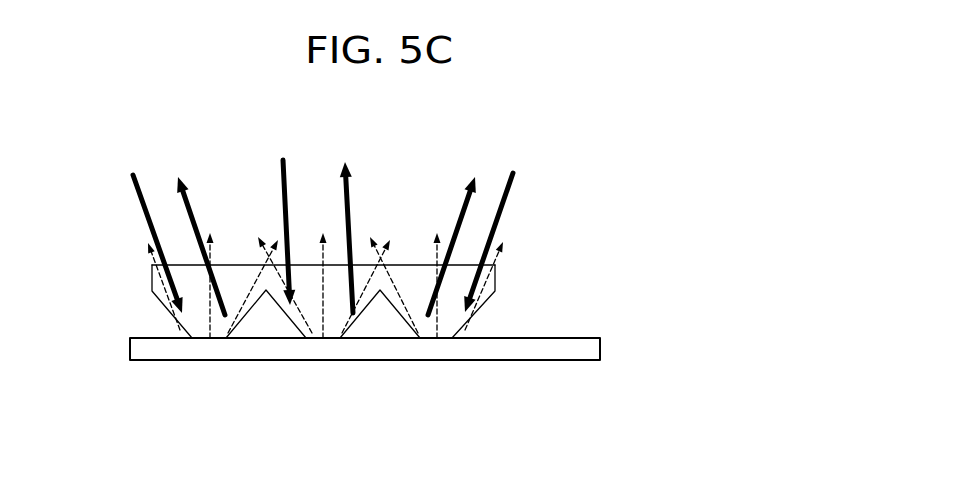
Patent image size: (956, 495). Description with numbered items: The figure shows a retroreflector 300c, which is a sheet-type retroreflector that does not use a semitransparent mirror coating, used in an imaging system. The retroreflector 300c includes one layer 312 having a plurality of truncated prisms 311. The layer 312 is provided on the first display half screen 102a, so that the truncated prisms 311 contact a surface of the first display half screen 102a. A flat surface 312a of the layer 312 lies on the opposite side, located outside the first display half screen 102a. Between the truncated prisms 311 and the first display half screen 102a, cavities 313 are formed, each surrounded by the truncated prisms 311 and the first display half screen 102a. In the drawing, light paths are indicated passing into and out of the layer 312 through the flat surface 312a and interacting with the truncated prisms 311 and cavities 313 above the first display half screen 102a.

The retroreflector 300c is at (367, 260).
The layer 312 is at (153, 275).
The flat surface 312a is at (415, 265).
The truncated prisms 311 is at (198, 325).
The cavities 313 is at (283, 327).
The first display half screen 102a is at (592, 350).